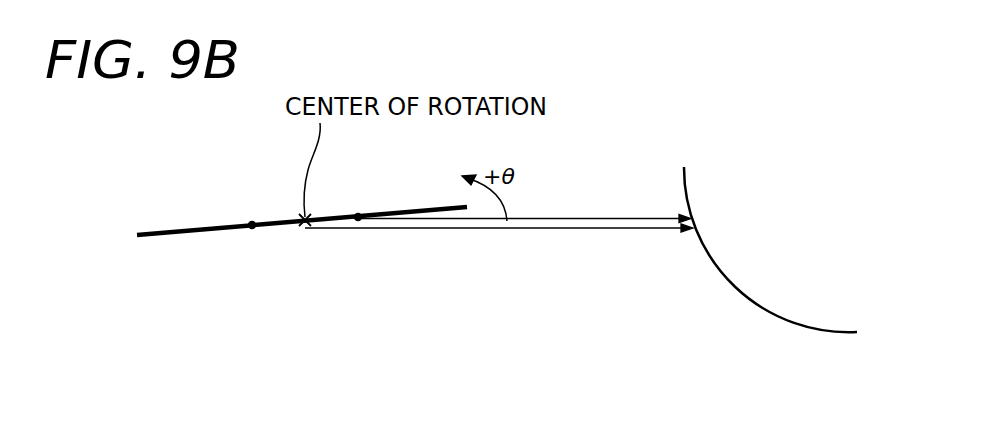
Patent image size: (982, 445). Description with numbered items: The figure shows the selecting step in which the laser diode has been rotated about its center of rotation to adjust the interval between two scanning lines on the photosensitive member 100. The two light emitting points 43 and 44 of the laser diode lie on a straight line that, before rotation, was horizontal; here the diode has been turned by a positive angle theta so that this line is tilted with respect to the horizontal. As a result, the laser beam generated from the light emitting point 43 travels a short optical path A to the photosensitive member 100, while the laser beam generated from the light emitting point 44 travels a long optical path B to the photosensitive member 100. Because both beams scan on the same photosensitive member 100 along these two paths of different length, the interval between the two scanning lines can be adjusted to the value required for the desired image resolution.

The light emitting point 43 is at (358, 217).
The light emitting point 44 is at (252, 225).
The photosensitive member 100 is at (732, 282).
The short optical path A is at (545, 218).
The long optical path B is at (555, 230).